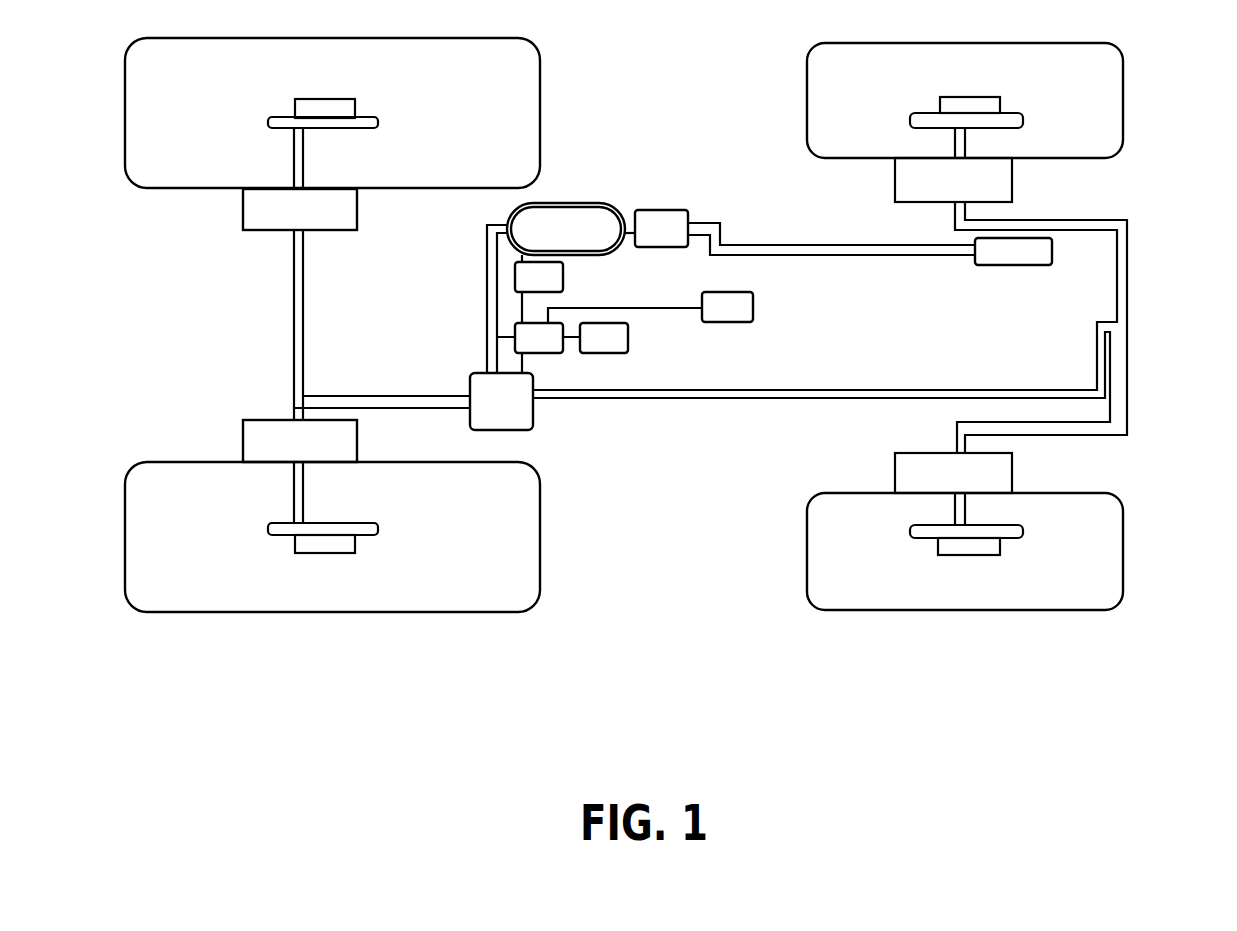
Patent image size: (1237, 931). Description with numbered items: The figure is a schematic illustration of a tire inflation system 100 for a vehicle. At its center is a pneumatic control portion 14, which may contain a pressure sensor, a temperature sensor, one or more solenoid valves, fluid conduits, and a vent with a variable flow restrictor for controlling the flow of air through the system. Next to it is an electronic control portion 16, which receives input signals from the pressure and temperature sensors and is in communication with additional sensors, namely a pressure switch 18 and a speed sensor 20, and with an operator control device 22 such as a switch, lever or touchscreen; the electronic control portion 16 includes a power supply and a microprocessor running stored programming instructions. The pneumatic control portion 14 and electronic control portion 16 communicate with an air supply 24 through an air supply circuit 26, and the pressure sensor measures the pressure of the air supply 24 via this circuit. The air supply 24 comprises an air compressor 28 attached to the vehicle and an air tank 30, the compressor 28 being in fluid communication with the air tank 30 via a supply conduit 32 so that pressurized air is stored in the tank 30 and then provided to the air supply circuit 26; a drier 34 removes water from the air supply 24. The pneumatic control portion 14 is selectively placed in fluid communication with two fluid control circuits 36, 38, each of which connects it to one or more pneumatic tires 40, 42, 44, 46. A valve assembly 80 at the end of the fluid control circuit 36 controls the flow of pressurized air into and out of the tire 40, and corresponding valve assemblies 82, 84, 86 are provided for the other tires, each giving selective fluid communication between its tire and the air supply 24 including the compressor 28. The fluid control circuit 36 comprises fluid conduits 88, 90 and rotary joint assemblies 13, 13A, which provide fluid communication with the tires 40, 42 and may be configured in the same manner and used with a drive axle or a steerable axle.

The tire inflation system 100 is at (1157, 197).
The rotary joint assembly 13 is at (300, 441).
The rotary joint assembly 13A is at (300, 209).
The pneumatic control portion 14 is at (501, 401).
The electronic control portion 16 is at (539, 338).
The pressure switch 18 is at (539, 277).
The speed sensor 20 is at (604, 338).
The operator control device 22 is at (727, 307).
The air supply 24 is at (690, 190).
The air supply circuit 26 is at (487, 298).
The air compressor 28 is at (1013, 251).
The air tank 30 is at (566, 229).
The supply conduit 32 is at (752, 243).
The drier 34 is at (661, 228).
The fluid control circuit 36 is at (387, 396).
The fluid control circuit 38 is at (703, 399).
The pneumatic tire 40 is at (332, 537).
The pneumatic tire 42 is at (332, 113).
The pneumatic tire 44 is at (965, 551).
The pneumatic tire 46 is at (965, 100).
The valve assembly 80 is at (378, 535).
The valve assembly 82 is at (1018, 538).
The valve assembly 84 is at (1020, 113).
The valve assembly 86 is at (378, 128).
The fluid conduit 88 is at (290, 272).
The fluid conduit 90 is at (291, 412).